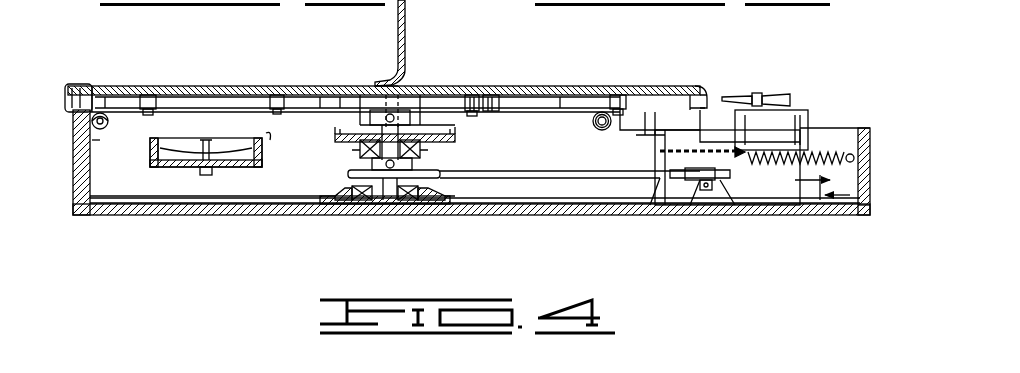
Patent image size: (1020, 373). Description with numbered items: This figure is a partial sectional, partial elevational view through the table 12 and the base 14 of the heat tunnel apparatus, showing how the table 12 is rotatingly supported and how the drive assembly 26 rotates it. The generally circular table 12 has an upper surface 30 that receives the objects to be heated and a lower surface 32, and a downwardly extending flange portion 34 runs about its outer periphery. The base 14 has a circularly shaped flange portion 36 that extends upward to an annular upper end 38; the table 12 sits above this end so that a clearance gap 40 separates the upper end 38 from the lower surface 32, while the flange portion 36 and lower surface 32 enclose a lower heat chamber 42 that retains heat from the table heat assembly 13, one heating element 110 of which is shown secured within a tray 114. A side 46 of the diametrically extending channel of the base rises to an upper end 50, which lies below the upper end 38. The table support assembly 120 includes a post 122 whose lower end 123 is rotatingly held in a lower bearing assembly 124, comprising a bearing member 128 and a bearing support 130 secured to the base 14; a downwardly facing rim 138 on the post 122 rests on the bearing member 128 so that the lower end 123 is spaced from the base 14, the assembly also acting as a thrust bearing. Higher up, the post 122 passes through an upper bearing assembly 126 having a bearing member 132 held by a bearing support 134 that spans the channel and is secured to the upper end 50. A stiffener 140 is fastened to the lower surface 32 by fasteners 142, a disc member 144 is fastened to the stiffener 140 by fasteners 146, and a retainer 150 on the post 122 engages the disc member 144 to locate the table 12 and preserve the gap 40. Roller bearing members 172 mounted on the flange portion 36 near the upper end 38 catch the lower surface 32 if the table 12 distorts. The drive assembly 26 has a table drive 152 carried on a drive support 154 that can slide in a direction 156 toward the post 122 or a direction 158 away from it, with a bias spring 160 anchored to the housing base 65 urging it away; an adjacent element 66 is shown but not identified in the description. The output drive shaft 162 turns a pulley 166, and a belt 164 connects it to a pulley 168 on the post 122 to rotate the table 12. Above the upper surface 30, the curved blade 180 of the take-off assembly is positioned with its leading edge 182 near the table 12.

The table 12 is at (520, 90).
The table heat assembly 13 is at (150, 150).
The base 14 is at (160, 213).
The drive assembly 26 is at (800, 120).
The upper surface 30 is at (665, 97).
The lower surface 32 is at (650, 123).
The downwardly extending flange portion 34 is at (68, 104).
The flange portion 36 is at (78, 183).
The annular upper end 38 is at (88, 92).
The clearance gap 40 is at (705, 95).
The lower heat chamber 42 is at (300, 172).
The side 46 is at (97, 145).
The upper end 50 is at (273, 147).
The housing base 65 is at (862, 212).
The right wall 66 is at (870, 143).
The heating element 110 is at (175, 148).
The tray 114 is at (172, 165).
The table support assembly 120 is at (290, 202).
The post 122 is at (370, 125).
The lower end 123 is at (388, 205).
The lower bearing assembly 124 is at (435, 188).
The upper bearing assembly 126 is at (430, 140).
The bearing member 128 is at (372, 205).
The bearing support 130 is at (330, 205).
The bearing member 132 is at (398, 158).
The bearing support 134 is at (335, 137).
The downwardly facing rim 138 is at (403, 205).
The stiffener 140 is at (583, 92).
The fasteners 142 is at (127, 65).
The disc member 144 is at (412, 103).
The fasteners 146 is at (295, 90).
The retainer 150 is at (372, 128).
The table drive 152 is at (760, 115).
The drive support 154 is at (660, 178).
The direction 156 is at (805, 185).
The direction 158 is at (830, 198).
The bias spring 160 is at (835, 160).
The output drive shaft 162 is at (720, 180).
The belt 164 is at (518, 175).
The pulley 166 is at (682, 178).
The pulley 168 is at (355, 165).
The roller bearing members 172 is at (112, 122).
The curved blade 180 is at (412, 15).
The leading edge 182 is at (380, 85).